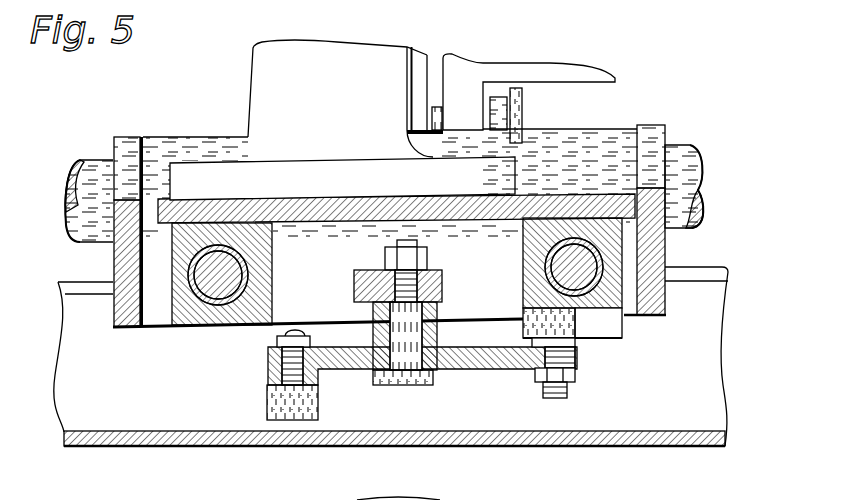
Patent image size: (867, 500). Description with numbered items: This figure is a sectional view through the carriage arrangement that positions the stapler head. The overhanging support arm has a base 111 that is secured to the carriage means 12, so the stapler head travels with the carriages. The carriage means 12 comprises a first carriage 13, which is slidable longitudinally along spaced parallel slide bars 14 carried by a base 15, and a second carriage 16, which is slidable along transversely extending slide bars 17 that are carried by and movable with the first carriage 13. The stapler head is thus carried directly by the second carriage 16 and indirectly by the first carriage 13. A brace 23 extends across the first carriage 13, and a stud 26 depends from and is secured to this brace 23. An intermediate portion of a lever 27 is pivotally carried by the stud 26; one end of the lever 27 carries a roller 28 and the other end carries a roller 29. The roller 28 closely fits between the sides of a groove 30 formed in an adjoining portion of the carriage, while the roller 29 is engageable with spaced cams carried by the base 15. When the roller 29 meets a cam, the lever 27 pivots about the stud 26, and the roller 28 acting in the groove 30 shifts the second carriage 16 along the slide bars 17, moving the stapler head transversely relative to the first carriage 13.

The base 111 is at (254, 82).
The carriage means 12 is at (153, 134).
The first carriage 13 is at (602, 142).
The slide bars 14 is at (677, 160).
The base 15 is at (699, 433).
The second carriage 16 is at (290, 197).
The slide bars 17 is at (218, 290).
The brace 23 is at (355, 278).
The stud 26 is at (408, 385).
The lever 27 is at (518, 368).
The roller 28 is at (562, 322).
The roller 29 is at (267, 403).
The groove 30 is at (602, 320).